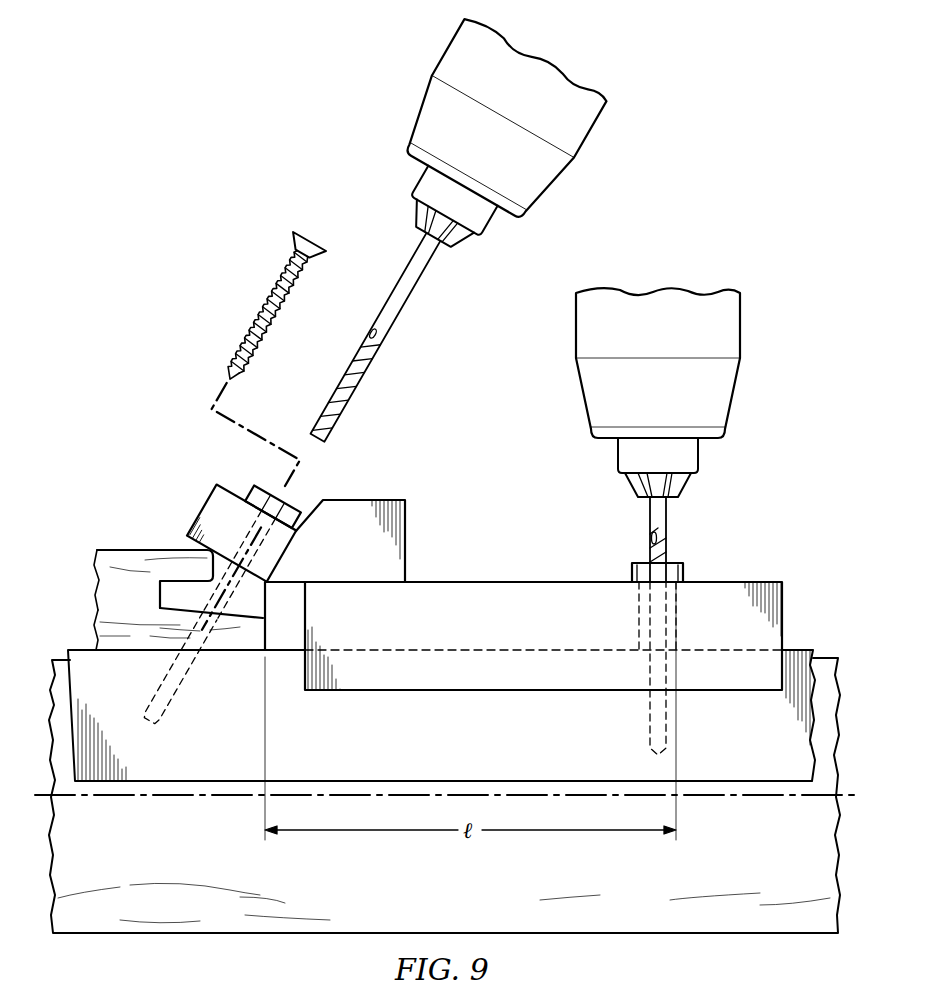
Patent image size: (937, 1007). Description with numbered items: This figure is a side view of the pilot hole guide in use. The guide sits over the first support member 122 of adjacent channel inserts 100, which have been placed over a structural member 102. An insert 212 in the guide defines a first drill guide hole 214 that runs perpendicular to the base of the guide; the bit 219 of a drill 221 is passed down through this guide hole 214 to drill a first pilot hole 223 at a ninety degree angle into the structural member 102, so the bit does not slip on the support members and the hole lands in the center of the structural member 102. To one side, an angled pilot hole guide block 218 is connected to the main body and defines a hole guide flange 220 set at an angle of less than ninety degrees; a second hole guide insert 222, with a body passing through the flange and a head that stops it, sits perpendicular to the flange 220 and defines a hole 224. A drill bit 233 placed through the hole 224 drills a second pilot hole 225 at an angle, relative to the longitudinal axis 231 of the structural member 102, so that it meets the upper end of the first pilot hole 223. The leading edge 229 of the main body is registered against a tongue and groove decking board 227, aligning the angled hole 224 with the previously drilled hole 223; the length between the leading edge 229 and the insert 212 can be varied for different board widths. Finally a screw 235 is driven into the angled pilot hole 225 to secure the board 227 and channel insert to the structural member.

The channel insert 100 is at (465, 749).
The structural member 102 is at (465, 890).
The first support member 122 is at (78, 648).
The insert 212 is at (684, 571).
The first drill guide hole 214 is at (664, 597).
The angled pilot hole guide block 218 is at (406, 539).
The bit 219 is at (668, 527).
The hole guide flange 220 is at (203, 508).
The drill 221 is at (740, 335).
The second hole guide insert 222 is at (252, 493).
The first pilot hole 223 is at (652, 705).
The hole 224 is at (262, 533).
The second pilot hole 225 is at (172, 668).
The decking board 227 is at (93, 568).
The leading edge 229 is at (263, 606).
The longitudinal axis 231 is at (198, 797).
The drill bit 233 is at (381, 307).
The screw 235 is at (262, 292).